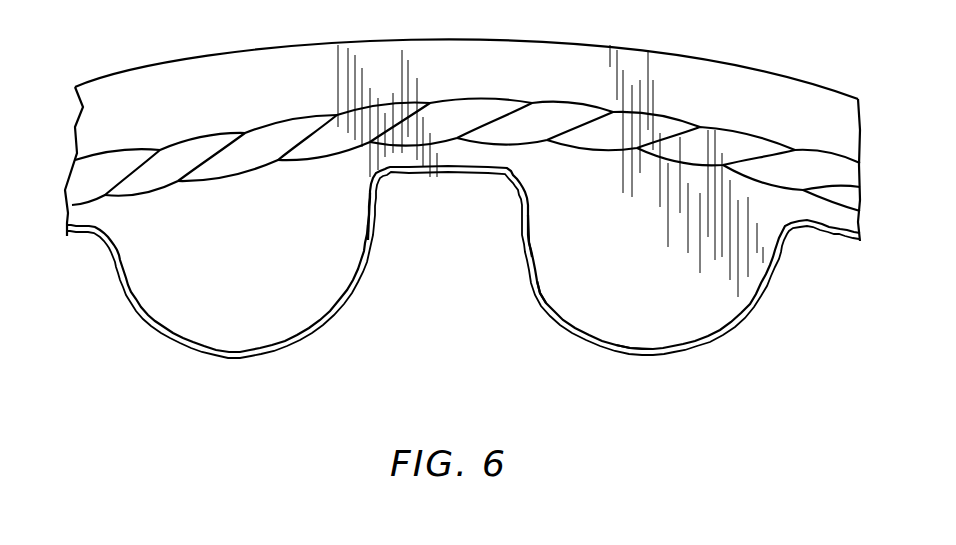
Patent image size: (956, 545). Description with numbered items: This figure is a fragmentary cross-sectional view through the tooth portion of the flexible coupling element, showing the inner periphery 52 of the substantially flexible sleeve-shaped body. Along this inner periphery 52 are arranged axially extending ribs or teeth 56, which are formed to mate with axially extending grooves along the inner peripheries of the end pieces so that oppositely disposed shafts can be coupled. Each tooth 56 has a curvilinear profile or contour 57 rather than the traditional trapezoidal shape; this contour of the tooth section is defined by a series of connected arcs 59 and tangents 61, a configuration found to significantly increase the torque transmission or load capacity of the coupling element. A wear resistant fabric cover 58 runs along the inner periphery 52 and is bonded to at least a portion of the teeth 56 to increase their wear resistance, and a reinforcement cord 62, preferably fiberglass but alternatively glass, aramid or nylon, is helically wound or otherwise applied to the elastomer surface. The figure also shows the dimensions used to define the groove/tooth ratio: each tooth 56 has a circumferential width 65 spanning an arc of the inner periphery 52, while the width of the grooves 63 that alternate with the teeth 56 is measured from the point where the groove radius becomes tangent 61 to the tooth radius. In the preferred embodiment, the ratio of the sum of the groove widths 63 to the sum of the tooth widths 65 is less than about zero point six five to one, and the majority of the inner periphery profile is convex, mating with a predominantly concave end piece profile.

The inner periphery 52 is at (833, 238).
The teeth 56 is at (311, 305).
The curvilinear profile 57 is at (534, 314).
The wear resistant fabric cover 58 is at (632, 352).
The arcs 59 is at (372, 192).
The tangents 61 is at (373, 225).
The reinforcement cord 62 is at (757, 138).
The groove width 63 is at (508, 227).
The tooth width 65 is at (350, 227).